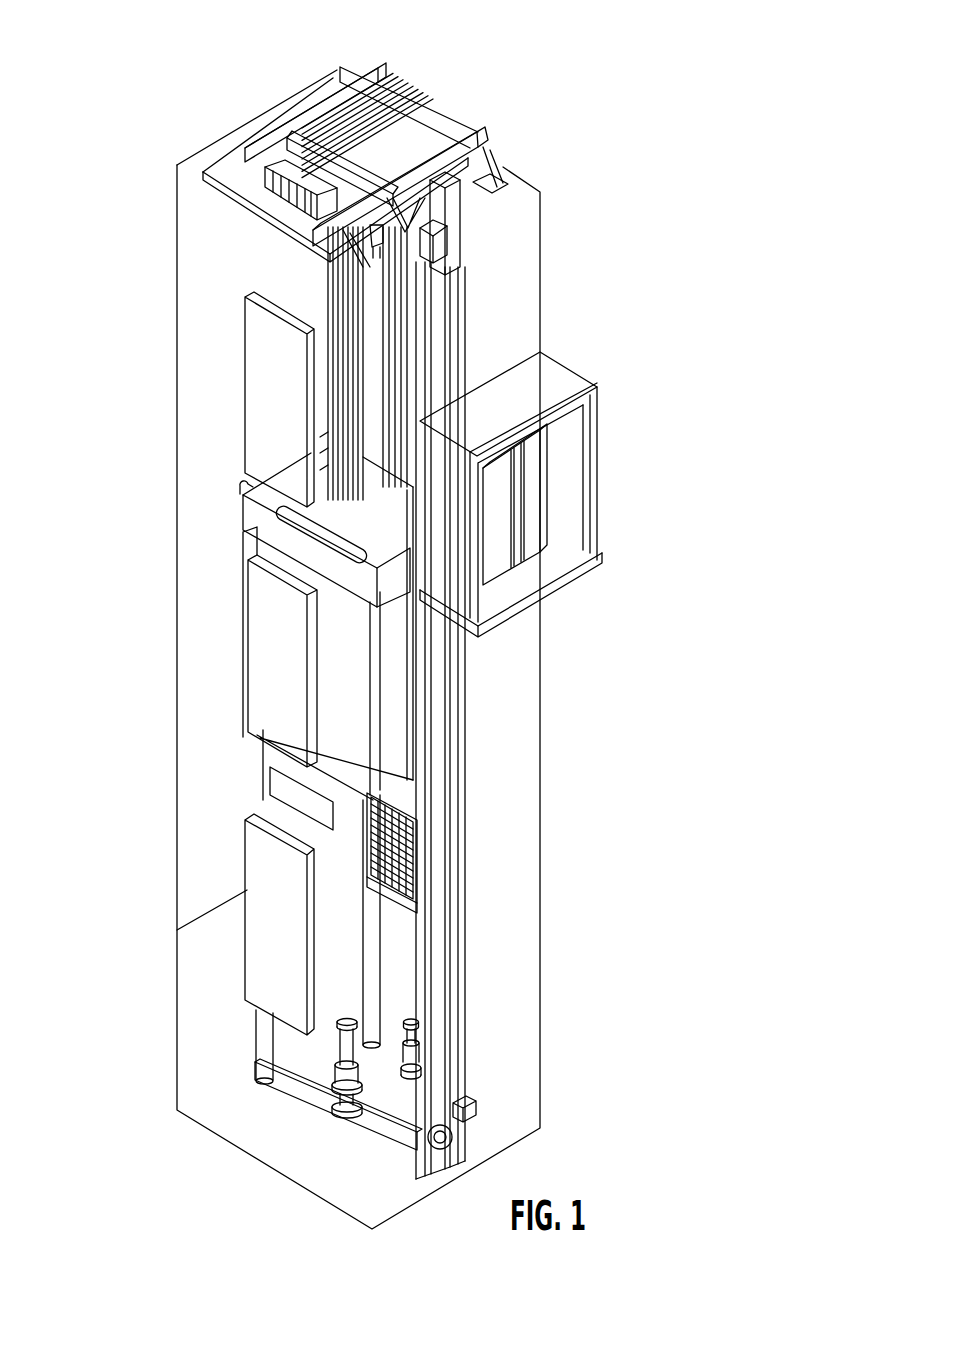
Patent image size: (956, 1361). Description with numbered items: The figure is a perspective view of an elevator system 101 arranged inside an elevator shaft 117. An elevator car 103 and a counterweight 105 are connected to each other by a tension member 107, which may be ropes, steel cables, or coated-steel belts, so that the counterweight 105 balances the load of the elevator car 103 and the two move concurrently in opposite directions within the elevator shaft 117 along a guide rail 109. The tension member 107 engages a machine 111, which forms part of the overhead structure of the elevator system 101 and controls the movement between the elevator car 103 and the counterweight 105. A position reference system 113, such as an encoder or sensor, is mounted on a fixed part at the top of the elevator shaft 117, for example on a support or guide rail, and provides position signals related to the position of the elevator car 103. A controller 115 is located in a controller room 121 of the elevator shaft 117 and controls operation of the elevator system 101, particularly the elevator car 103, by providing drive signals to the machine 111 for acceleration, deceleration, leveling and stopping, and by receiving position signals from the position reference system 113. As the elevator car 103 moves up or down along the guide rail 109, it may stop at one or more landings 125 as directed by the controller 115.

The elevator system 101 is at (560, 119).
The elevator car 103 is at (360, 697).
The counterweight 105 is at (413, 870).
The tension member 107 is at (364, 398).
The guide rail 109 is at (440, 787).
The machine 111 is at (268, 165).
The position reference system 113 is at (436, 240).
The controller 115 is at (540, 503).
The elevator shaft 117 is at (218, 782).
The controller room 121 is at (604, 383).
The landings 125 is at (245, 380).